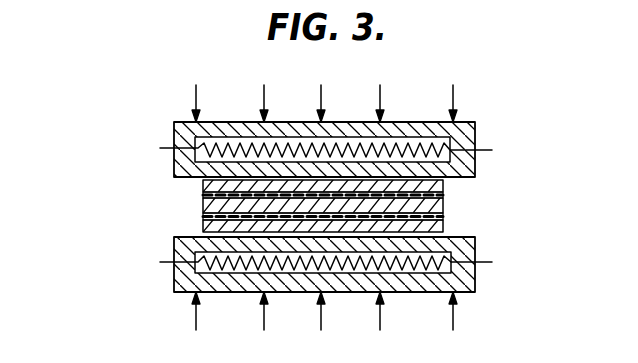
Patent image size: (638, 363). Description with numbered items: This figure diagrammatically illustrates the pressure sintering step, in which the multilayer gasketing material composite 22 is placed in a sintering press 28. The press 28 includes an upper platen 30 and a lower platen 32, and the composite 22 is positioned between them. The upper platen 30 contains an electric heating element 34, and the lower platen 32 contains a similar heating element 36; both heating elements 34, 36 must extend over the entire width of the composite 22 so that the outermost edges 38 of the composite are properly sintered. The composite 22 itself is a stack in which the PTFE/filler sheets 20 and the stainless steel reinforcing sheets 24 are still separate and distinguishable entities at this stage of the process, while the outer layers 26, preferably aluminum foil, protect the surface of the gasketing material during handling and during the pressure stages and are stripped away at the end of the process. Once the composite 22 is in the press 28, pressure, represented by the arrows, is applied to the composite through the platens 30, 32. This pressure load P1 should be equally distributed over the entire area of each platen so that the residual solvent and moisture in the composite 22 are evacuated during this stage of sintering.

The PTFE/filler sheets 20 is at (203, 226).
The gasketing material composite 22 is at (484, 210).
The stainless steel reinforcing sheets 24 is at (445, 214).
The outer layers 26 is at (433, 180).
The sintering press 28 is at (155, 128).
The upper platen 30 is at (243, 122).
The lower platen 32 is at (397, 283).
The electric heating element 34 is at (343, 146).
The heating element 36 is at (302, 263).
The outermost edges 38 is at (203, 186).
The pressure load P1 is at (324, 208).